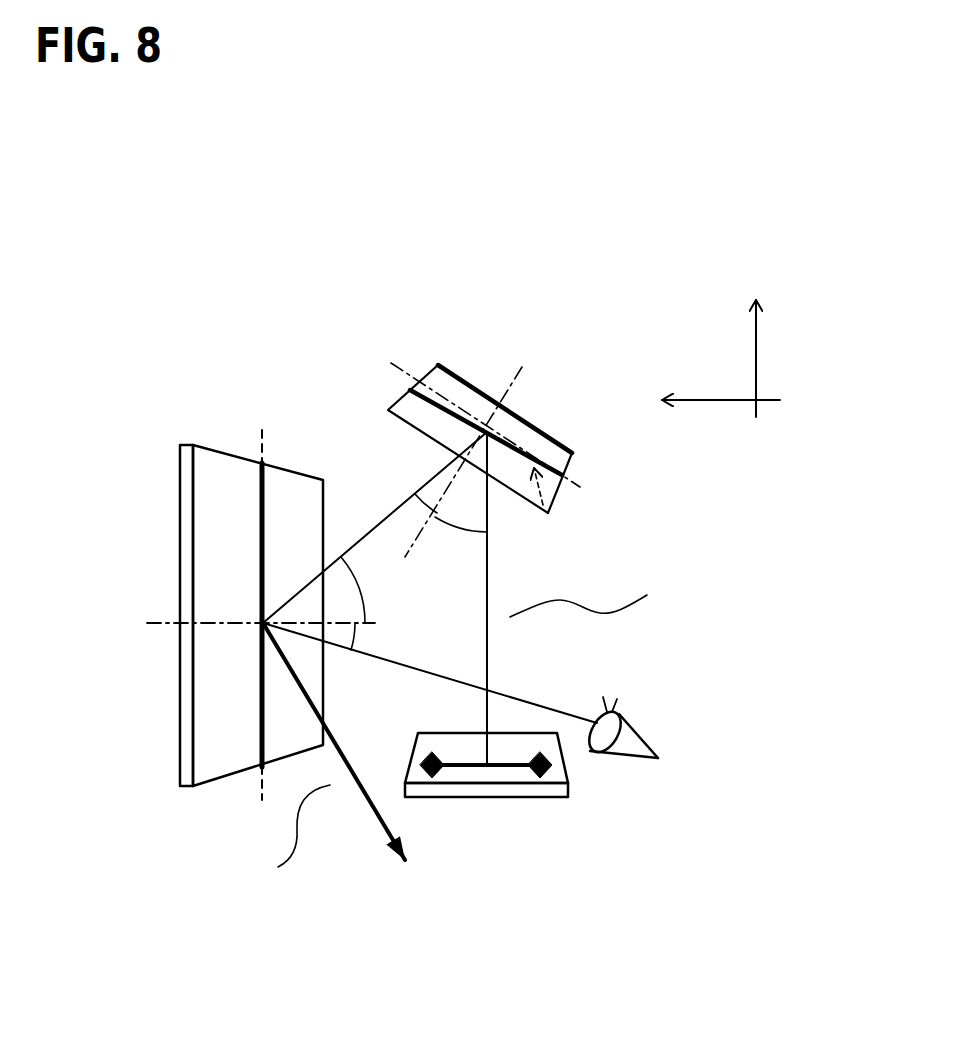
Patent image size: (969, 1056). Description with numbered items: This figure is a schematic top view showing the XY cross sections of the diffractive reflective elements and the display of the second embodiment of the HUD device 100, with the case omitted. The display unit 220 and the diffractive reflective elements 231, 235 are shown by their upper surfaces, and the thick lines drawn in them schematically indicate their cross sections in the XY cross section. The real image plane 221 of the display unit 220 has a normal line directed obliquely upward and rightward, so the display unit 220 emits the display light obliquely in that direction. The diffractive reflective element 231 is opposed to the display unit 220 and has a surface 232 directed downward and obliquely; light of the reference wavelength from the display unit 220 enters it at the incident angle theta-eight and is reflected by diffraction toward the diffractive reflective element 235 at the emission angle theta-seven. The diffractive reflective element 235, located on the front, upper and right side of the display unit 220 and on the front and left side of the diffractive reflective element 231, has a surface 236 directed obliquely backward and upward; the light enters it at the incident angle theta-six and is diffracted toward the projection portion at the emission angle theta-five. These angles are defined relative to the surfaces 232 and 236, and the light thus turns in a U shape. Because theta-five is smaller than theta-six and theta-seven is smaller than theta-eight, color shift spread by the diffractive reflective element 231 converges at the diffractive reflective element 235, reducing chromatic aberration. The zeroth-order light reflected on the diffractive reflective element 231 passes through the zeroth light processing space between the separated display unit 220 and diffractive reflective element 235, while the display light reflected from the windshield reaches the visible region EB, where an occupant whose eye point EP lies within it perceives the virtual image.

The HUD device 100 is at (436, 598).
The display unit 220 is at (526, 805).
The real image plane 221 is at (516, 757).
The diffractive reflective element 231 is at (530, 460).
The surface 232 is at (548, 513).
The diffractive reflective element 235 is at (206, 584).
The surface 236 is at (268, 499).
The visible region EB is at (658, 718).
The eye point EP is at (613, 707).